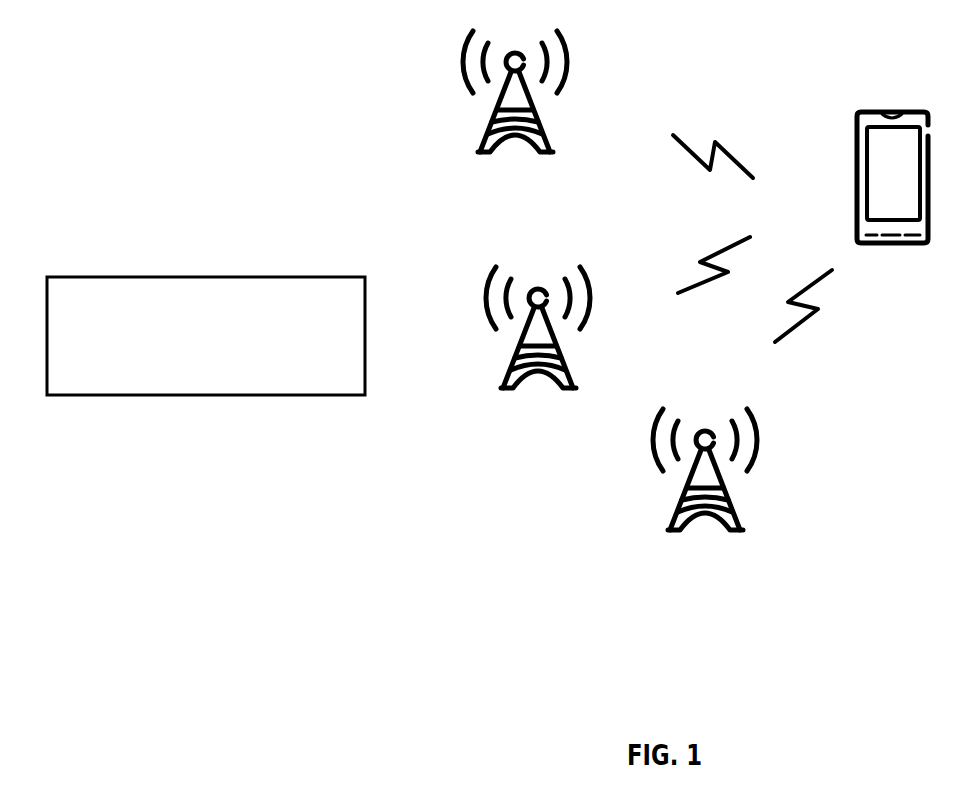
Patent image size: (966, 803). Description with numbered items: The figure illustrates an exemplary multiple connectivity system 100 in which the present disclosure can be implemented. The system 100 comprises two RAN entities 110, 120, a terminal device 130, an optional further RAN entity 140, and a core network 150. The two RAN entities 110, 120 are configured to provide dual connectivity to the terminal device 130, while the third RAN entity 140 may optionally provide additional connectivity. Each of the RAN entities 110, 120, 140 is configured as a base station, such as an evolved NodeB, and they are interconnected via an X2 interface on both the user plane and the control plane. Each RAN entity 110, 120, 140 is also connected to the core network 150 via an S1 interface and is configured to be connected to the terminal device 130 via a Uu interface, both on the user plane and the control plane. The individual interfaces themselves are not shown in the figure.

The multiple connectivity system 100 is at (211, 78).
The RAN entity 110 is at (487, 155).
The RAN entity 120 is at (510, 392).
The terminal device 130 is at (880, 110).
The further RAN entity 140 is at (675, 532).
The core network 150 is at (230, 395).